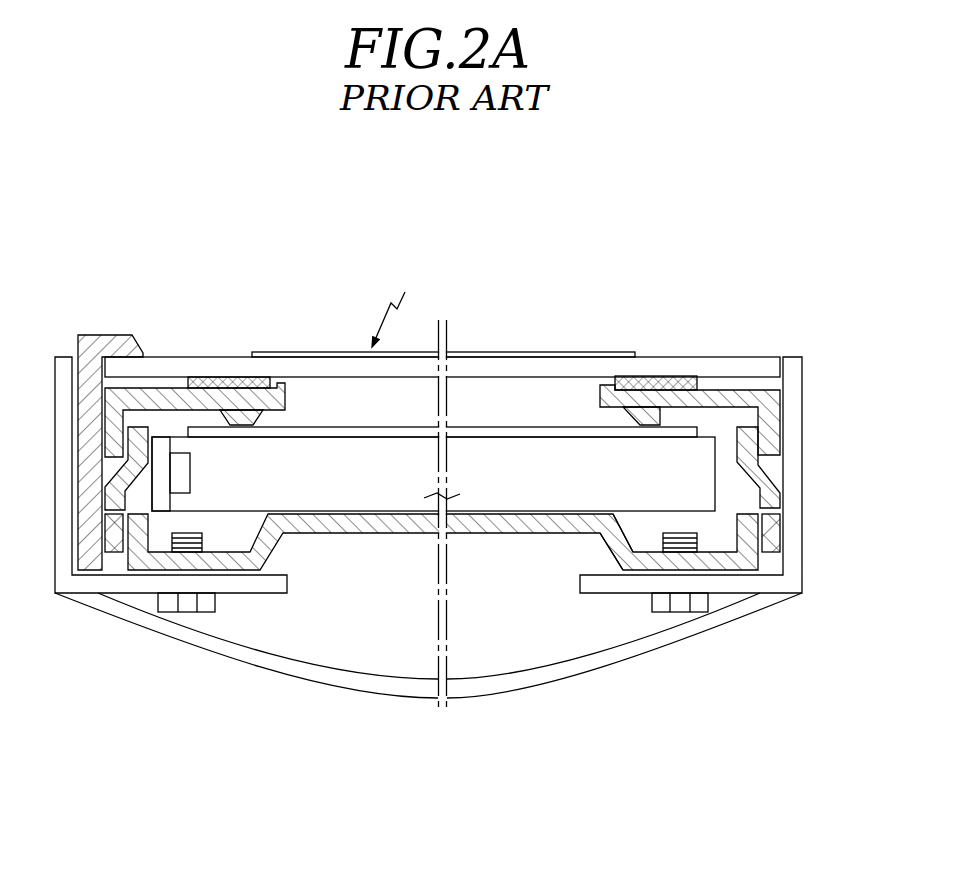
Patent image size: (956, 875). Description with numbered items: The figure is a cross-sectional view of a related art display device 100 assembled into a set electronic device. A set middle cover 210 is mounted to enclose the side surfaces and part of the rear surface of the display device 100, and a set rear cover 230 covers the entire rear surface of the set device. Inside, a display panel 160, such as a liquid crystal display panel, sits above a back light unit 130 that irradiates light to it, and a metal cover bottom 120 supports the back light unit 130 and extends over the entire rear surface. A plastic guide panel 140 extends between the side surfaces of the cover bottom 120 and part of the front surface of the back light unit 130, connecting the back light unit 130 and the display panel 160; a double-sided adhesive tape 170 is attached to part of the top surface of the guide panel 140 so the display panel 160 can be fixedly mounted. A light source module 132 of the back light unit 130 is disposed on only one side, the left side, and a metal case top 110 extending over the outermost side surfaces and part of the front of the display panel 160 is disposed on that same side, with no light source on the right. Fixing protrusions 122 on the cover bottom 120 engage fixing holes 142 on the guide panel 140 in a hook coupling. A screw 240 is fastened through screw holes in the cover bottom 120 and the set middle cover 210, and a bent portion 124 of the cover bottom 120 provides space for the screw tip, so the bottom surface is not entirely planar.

The display device 100 is at (396, 308).
The case top 110 is at (120, 342).
The cover bottom 120 is at (150, 565).
The fixing protrusion 122 is at (778, 522).
The bent portion 124 is at (602, 551).
The back light unit 130 is at (698, 492).
The light source module 132 is at (162, 443).
The guide panel 140 is at (703, 388).
The fixing hole 142 is at (765, 458).
The display panel 160 is at (233, 365).
The double-sided adhesive tape 170 is at (667, 375).
The set middle cover 210 is at (800, 388).
The set rear cover 230 is at (742, 618).
The screw 240 is at (665, 612).